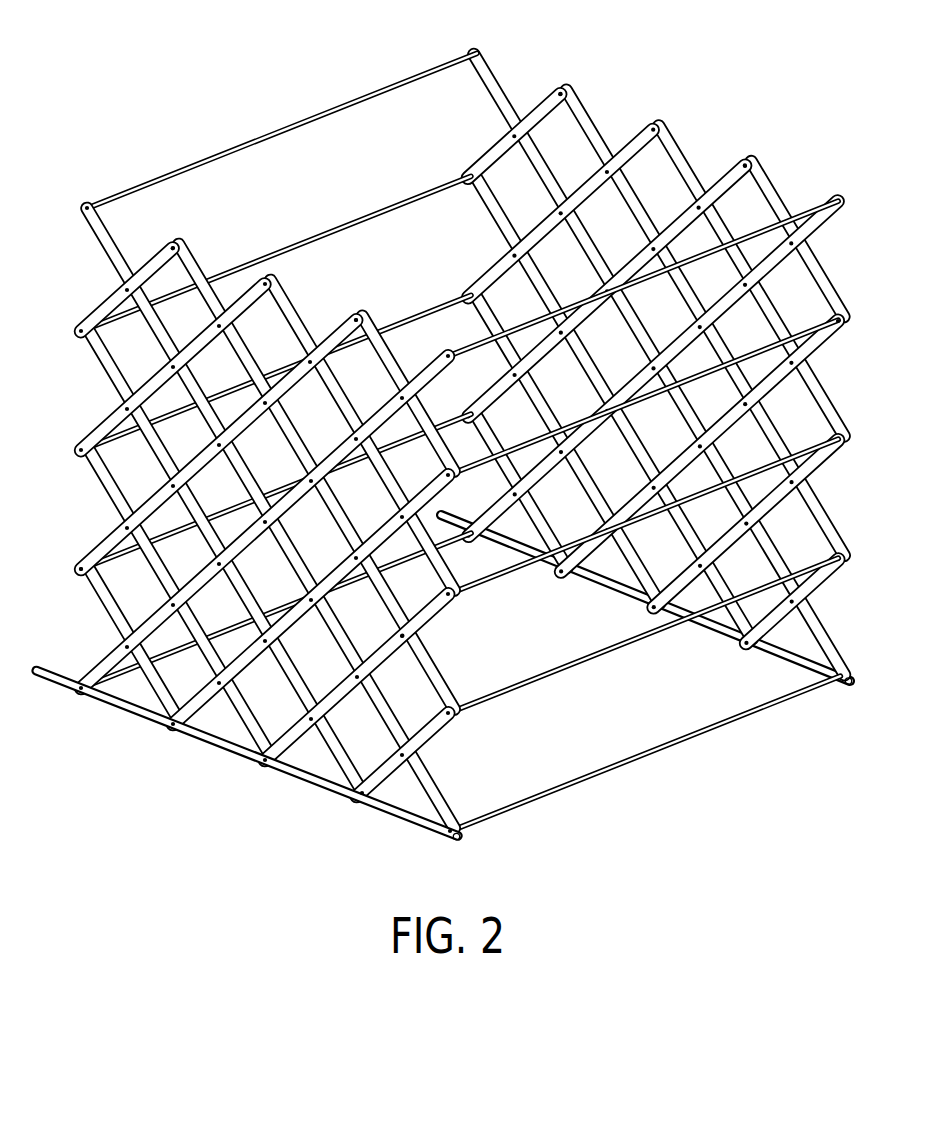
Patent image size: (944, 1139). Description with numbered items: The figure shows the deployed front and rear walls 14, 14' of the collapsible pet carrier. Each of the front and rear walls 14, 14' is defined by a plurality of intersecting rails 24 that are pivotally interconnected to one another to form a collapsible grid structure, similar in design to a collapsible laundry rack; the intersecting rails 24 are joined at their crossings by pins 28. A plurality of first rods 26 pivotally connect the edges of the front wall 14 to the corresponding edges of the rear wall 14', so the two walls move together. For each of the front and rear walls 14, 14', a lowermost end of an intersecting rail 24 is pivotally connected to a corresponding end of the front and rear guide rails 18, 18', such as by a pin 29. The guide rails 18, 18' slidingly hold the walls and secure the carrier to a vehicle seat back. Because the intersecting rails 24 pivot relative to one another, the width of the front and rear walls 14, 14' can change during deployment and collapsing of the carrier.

The front wall 14 is at (243, 517).
The rear wall 14' is at (645, 366).
The front guide rail 18 is at (504, 851).
The rear guide rail 18' is at (836, 720).
The intersecting rail 24 is at (110, 532).
The first rod 26 is at (277, 136).
The pin 28 is at (175, 248).
The pin 29 is at (450, 835).